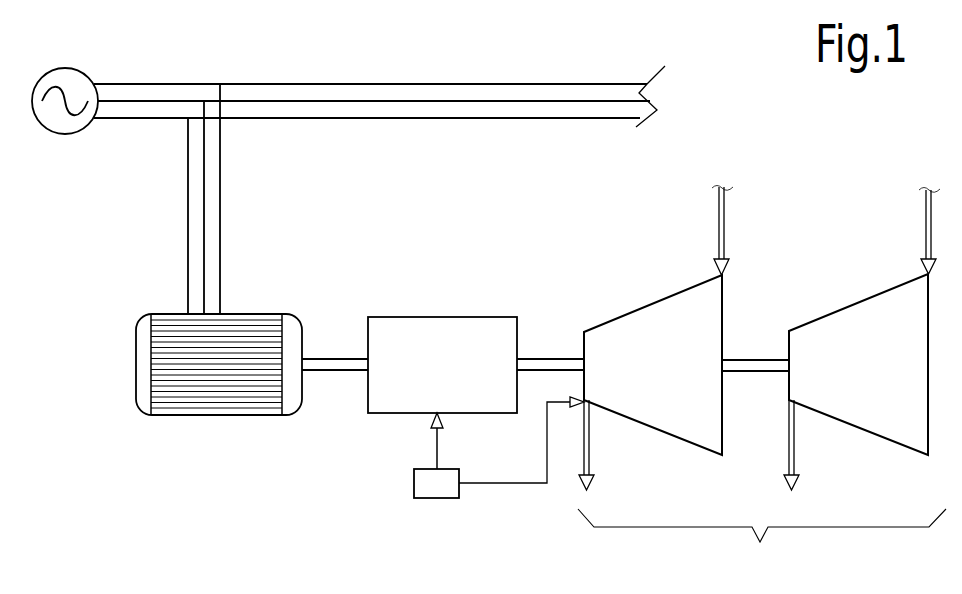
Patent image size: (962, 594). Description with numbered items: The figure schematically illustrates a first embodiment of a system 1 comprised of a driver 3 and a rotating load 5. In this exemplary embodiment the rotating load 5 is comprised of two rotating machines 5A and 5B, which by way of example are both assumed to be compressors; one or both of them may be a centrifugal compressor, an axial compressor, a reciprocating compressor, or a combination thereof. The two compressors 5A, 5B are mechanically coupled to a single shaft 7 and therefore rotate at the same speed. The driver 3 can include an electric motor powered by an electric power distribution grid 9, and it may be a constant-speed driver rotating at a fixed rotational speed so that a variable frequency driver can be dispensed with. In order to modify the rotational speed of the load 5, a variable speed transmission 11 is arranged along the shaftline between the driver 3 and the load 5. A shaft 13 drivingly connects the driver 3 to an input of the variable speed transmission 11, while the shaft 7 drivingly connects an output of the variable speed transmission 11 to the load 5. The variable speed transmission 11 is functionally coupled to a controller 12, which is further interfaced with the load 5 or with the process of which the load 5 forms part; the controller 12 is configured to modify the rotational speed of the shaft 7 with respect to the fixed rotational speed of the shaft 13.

The system 1 is at (672, 174).
The driver 3 is at (217, 397).
The rotating load 5 is at (762, 543).
The rotating machine 5A is at (665, 340).
The rotating machine 5B is at (867, 342).
The shaft 7 is at (545, 366).
The electric power distribution grid 9 is at (302, 118).
The variable speed transmission 11 is at (425, 330).
The controller 12 is at (422, 485).
The shaft 13 is at (338, 366).